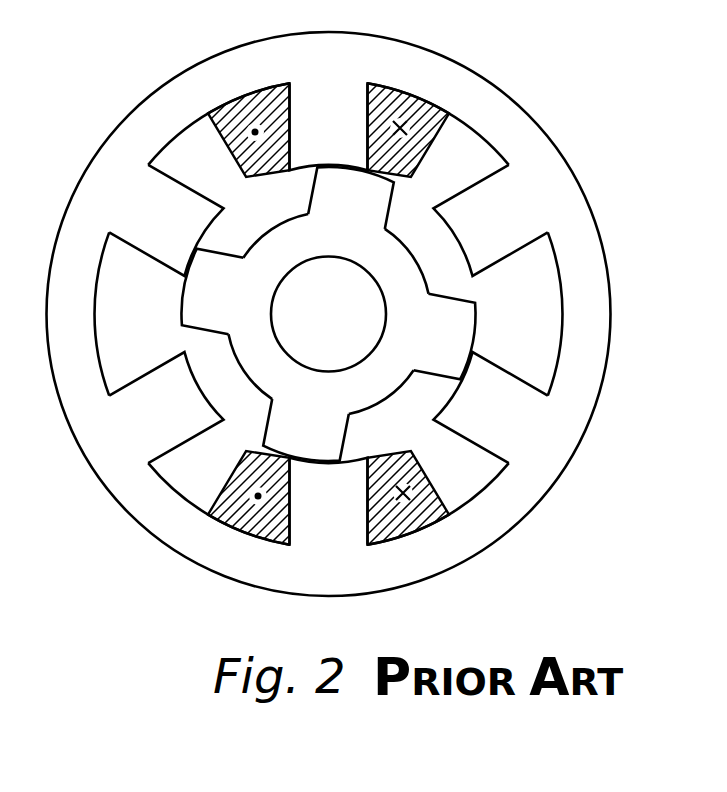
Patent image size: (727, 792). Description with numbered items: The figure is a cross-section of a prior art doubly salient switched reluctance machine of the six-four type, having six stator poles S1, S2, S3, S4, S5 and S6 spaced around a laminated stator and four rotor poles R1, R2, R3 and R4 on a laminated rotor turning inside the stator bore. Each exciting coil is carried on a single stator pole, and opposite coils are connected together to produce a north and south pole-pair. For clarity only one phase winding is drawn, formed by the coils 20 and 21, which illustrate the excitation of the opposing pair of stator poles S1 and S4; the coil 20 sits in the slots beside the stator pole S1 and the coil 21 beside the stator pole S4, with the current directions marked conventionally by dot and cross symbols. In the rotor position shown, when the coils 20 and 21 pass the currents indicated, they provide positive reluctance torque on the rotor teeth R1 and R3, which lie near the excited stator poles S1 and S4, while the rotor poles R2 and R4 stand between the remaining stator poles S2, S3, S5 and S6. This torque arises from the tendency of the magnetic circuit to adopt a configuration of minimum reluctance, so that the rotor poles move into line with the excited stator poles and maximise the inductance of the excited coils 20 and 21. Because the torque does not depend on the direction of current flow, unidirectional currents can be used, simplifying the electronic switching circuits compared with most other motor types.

The coil 20 is at (385, 103).
The coil 21 is at (420, 533).
The stator pole S1 is at (329, 126).
The stator pole S2 is at (491, 220).
The stator pole S3 is at (491, 407).
The stator pole S4 is at (329, 501).
The stator pole S5 is at (166, 407).
The stator pole S6 is at (166, 220).
The rotor pole R1 is at (351, 198).
The rotor pole R2 is at (445, 337).
The rotor pole R3 is at (306, 430).
The rotor pole R4 is at (212, 292).